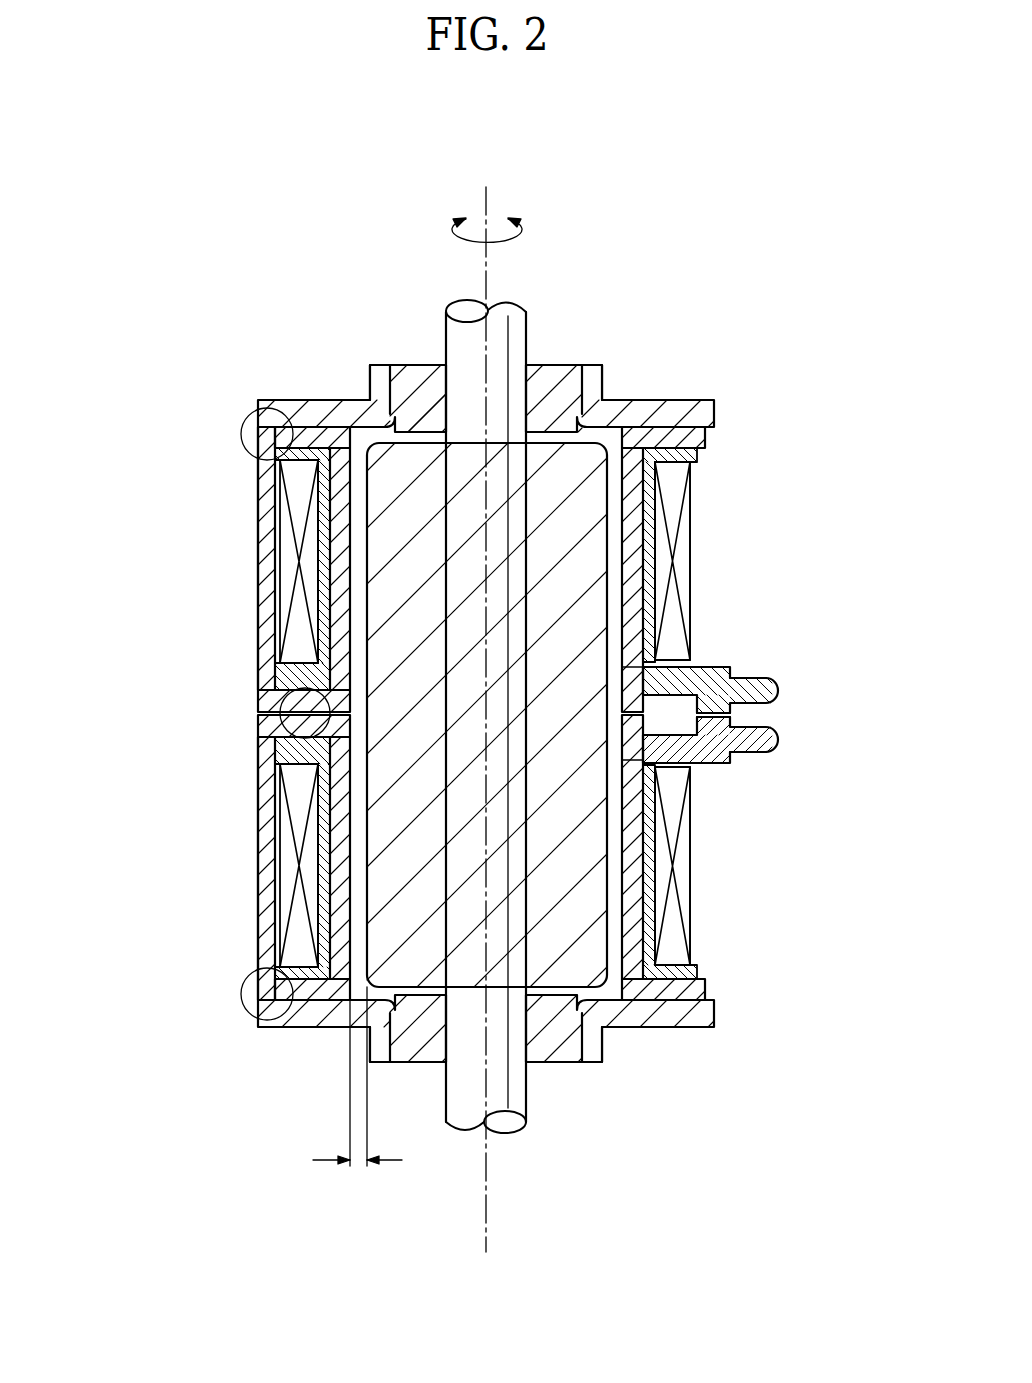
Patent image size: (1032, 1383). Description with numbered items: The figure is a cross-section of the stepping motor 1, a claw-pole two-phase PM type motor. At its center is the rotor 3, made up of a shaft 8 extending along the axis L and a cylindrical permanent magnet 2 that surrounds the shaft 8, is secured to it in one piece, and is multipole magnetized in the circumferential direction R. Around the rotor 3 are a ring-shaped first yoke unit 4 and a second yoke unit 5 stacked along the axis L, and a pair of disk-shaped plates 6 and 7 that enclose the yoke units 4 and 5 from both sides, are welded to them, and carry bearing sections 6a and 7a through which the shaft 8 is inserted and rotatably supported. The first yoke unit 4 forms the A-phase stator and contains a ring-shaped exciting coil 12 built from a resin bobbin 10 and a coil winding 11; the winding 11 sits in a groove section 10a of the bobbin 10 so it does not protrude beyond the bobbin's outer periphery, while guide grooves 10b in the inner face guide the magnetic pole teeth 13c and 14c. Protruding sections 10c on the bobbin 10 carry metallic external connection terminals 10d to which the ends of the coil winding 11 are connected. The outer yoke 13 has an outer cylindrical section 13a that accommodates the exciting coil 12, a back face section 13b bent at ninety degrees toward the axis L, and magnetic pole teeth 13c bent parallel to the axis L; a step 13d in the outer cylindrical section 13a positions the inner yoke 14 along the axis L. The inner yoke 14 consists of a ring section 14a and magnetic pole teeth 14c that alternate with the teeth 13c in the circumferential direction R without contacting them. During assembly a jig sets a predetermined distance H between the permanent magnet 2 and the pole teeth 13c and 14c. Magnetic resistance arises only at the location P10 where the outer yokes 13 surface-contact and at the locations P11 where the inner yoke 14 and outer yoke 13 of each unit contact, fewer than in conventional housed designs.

The stepping motor 1 is at (740, 285).
The permanent magnet 2 is at (588, 465).
The rotor 3 is at (507, 617).
The first yoke unit 4 is at (128, 453).
The second yoke unit 5 is at (112, 830).
The plate 6 is at (508, 367).
The bearing section 6a is at (552, 383).
The plate 7 is at (505, 1064).
The bearing section 7a is at (553, 1062).
The shaft 8 is at (452, 332).
The bobbin 10 is at (770, 699).
The groove section 10a is at (655, 525).
The guide grooves 10b is at (653, 498).
The protruding sections 10c is at (740, 668).
The external connection terminals 10d is at (785, 692).
The coil winding 11 is at (682, 553).
The exciting coil 12 is at (443, 727).
The outer yoke 13 is at (457, 711).
The outer cylindrical section 13a is at (265, 624).
The back face section 13b is at (292, 708).
The magnetic pole teeth 13c is at (262, 592).
The step 13d is at (268, 427).
The inner yoke 14 is at (459, 714).
The ring section 14a is at (640, 428).
The magnetic pole teeth 14c is at (647, 577).
The predetermined distance H is at (357, 1165).
The axis L is at (493, 200).
The circumferential direction R is at (524, 229).
The contacting location P10 is at (280, 722).
The contacting locations P11 is at (252, 415).